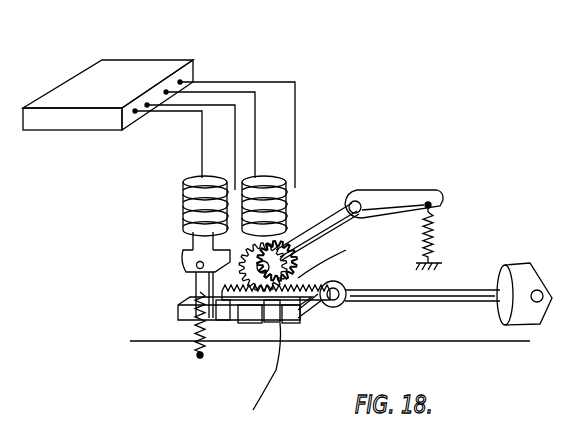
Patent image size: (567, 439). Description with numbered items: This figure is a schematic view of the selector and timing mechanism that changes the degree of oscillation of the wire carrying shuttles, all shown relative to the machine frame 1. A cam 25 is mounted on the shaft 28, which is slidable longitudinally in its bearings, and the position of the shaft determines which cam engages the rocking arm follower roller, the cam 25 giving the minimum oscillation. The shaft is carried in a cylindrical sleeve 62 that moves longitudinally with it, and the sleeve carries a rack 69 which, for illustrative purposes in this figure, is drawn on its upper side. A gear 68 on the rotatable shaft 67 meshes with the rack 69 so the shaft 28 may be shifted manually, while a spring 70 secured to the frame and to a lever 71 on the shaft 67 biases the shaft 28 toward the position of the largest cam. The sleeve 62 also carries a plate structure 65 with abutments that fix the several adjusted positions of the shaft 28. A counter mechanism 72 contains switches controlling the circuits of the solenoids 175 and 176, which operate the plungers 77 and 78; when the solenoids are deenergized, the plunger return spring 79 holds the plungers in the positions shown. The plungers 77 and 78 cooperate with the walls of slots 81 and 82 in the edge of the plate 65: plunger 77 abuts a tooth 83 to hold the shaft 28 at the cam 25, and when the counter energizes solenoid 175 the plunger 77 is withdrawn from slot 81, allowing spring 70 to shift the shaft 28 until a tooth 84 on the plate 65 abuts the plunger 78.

The base frame 1 is at (167, 346).
The counter mechanism 72 is at (140, 62).
The solenoid 175 is at (186, 203).
The solenoid 176 is at (258, 180).
The plunger 77 is at (195, 240).
The gear 68 is at (300, 252).
The rack 69 is at (300, 275).
The rotatable shaft 67 is at (323, 215).
The lever 71 is at (396, 197).
The spring 70 is at (440, 237).
The cylindrical sleeve 62 is at (341, 291).
The shaft 28 is at (398, 295).
The cam 25 is at (545, 260).
The plunger return spring 79 is at (196, 330).
The slot 81 is at (180, 310).
The tooth 83 is at (222, 326).
The slot 82 is at (248, 323).
The plate structure 65 is at (270, 323).
The tooth 84 is at (292, 323).
The plunger 78 is at (260, 380).